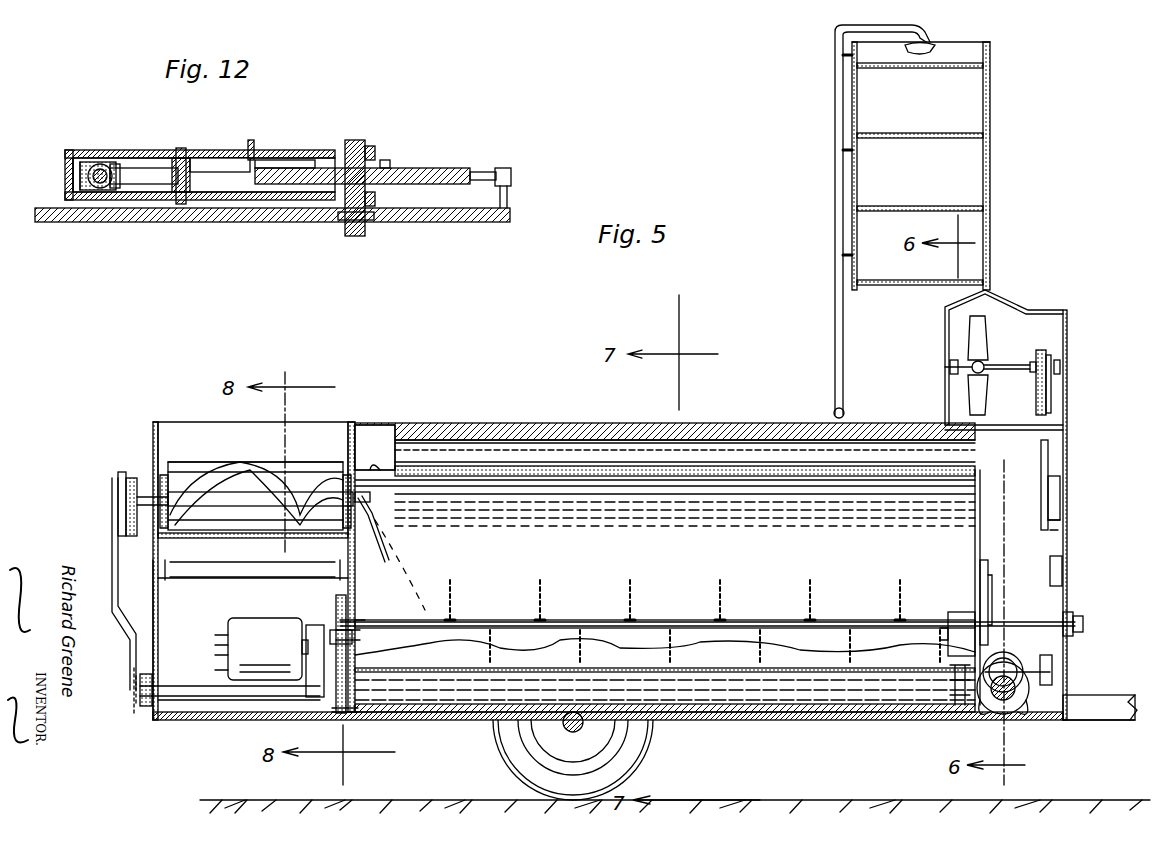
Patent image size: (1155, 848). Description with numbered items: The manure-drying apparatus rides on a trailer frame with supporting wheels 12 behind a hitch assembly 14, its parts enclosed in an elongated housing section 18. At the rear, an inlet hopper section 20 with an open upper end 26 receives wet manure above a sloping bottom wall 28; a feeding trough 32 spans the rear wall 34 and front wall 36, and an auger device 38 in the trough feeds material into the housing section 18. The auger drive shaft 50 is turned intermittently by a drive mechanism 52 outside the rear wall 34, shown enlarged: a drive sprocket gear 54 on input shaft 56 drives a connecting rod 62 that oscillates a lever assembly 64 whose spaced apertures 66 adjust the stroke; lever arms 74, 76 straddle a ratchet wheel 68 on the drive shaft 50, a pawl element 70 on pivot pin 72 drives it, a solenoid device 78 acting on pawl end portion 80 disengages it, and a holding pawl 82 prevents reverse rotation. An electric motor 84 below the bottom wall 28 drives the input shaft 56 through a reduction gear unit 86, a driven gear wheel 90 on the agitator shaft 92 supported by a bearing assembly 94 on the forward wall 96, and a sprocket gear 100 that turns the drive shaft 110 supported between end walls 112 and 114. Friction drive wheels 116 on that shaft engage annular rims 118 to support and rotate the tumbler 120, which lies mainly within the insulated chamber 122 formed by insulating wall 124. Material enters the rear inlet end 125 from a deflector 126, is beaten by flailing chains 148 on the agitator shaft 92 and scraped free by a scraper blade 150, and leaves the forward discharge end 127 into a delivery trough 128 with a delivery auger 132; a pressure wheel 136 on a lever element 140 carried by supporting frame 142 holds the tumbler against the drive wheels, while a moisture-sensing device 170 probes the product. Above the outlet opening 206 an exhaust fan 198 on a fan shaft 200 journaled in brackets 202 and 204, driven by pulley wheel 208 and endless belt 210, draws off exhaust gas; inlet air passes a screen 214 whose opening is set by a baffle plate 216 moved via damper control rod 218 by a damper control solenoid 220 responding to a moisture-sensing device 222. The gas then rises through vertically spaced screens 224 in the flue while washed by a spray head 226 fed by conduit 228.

In FIG. 5, the supporting wheels 12 is at (636, 733).
In FIG. 5, the hitch assembly 14 is at (1112, 700).
In FIG. 5, the housing section 18 is at (378, 416).
In FIG. 5, the inlet hopper section 20 is at (143, 442).
In FIG. 5, the open upper end 26 is at (188, 432).
In FIG. 5, the bottom wall 28 is at (200, 666).
In FIG. 5, the feeding trough 32 is at (242, 540).
In FIG. 12, the rear wall 34 is at (228, 222).
In FIG. 5, the rear wall 34 is at (150, 600).
In FIG. 5, the front wall 36 is at (348, 438).
In FIG. 5, the auger device 38 is at (205, 490).
In FIG. 12, the drive shaft 50 is at (342, 228).
In FIG. 5, the drive shaft 50 is at (140, 495).
In FIG. 5, the drive mechanism 52 is at (103, 536).
In FIG. 5, the drive sprocket gear 54 is at (145, 708).
In FIG. 5, the input shaft 56 is at (210, 697).
In FIG. 12, the connecting rod 62 is at (251, 140).
In FIG. 12, the oscillating lever assembly 64 is at (153, 142).
In FIG. 12, the spaced apertures 66 is at (212, 158).
In FIG. 12, the ratchet wheel 68 is at (420, 168).
In FIG. 5, the ratchet wheel 68 is at (126, 490).
In FIG. 12, the pawl element 70 is at (140, 184).
In FIG. 12, the pivot pin 72 is at (178, 204).
In FIG. 12, the lever arm 74 is at (100, 162).
In FIG. 12, the lever arm 76 is at (96, 190).
In FIG. 12, the solenoid device 78 is at (92, 166).
In FIG. 12, the end portion 80 is at (73, 186).
In FIG. 5, the end portion 80 is at (355, 638).
In FIG. 12, the holding pawl 82 is at (485, 172).
In FIG. 5, the electric motor 84 is at (245, 625).
In FIG. 5, the reduction gear unit 86 is at (315, 625).
In FIG. 5, the driven gear wheel 90 is at (346, 604).
In FIG. 5, the agitator shaft 92 is at (483, 620).
In FIG. 5, the bearing assembly 94 is at (1070, 614).
In FIG. 5, the forward wall 96 is at (1062, 490).
In FIG. 5, the sprocket gear 100 is at (340, 712).
In FIG. 5, the drive shaft 110 is at (475, 680).
In FIG. 5, the end wall 112 is at (400, 440).
In FIG. 5, the end wall 114 is at (905, 660).
In FIG. 5, the friction drive wheels 116 is at (956, 706).
In FIG. 5, the annular rims 118 is at (373, 462).
In FIG. 5, the tumbler 120 is at (564, 452).
In FIG. 5, the insulated chamber 122 is at (718, 440).
In FIG. 5, the insulating wall 124 is at (494, 440).
In FIG. 5, the rear inlet end 125 is at (368, 611).
In FIG. 5, the deflector 126 is at (382, 533).
In FIG. 5, the forward discharge end 127 is at (975, 500).
In FIG. 5, the delivery trough 128 is at (1018, 712).
In FIG. 5, the delivery auger 132 is at (1003, 652).
In FIG. 5, the pressure wheel 136 is at (958, 618).
In FIG. 5, the lever element 140 is at (982, 598).
In FIG. 5, the supporting frame 142 is at (975, 526).
In FIG. 5, the flailing chains 148 is at (543, 600).
In FIG. 5, the scraper blade 150 is at (725, 508).
In FIG. 5, the moisture-sensing device 170 is at (1099, 711).
In FIG. 5, the exhaust fan 198 is at (978, 325).
In FIG. 5, the fan shaft 200 is at (988, 366).
In FIG. 5, the journal bracket 202 is at (952, 388).
In FIG. 5, the journal bracket 204 is at (1058, 378).
In FIG. 5, the outlet opening 206 is at (1020, 432).
In FIG. 5, the pulley wheel 208 is at (1045, 355).
In FIG. 5, the endless belt 210 is at (1050, 400).
In FIG. 5, the screen 214 is at (1046, 352).
In FIG. 5, the baffle plate 216 is at (1040, 400).
In FIG. 5, the damper control rod 218 is at (1041, 494).
In FIG. 5, the damper control solenoid 220 is at (1060, 515).
In FIG. 5, the moisture-sensing device 222 is at (1062, 572).
In FIG. 5, the screens 224 is at (908, 206).
In FIG. 5, the spray head 226 is at (937, 46).
In FIG. 5, the conduit 228 is at (835, 190).